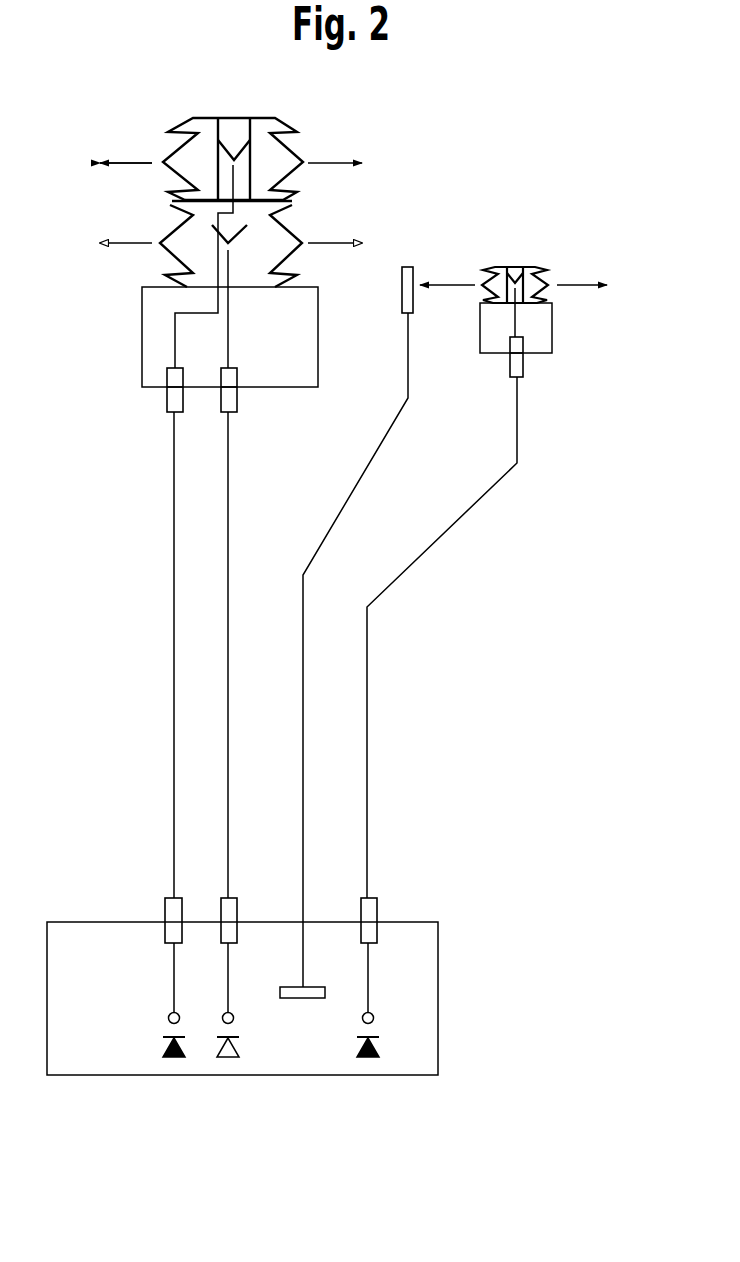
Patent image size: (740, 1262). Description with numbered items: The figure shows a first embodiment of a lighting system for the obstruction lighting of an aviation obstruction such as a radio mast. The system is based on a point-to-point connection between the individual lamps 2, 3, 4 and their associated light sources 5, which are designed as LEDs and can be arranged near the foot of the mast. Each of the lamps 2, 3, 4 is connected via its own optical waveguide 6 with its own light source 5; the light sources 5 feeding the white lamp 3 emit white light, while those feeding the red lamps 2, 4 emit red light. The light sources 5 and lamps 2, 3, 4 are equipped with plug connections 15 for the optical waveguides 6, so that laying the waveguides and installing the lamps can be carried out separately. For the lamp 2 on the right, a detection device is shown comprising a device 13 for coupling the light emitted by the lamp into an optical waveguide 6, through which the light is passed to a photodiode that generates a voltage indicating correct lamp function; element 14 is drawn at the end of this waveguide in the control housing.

The first lamp type lamp 2 is at (548, 262).
The second lamp type lamp 3 is at (158, 263).
The third lamp type lamp 4 is at (172, 112).
The light source 5 is at (177, 1060).
The optical waveguide 6 is at (228, 617).
The device for coupling light 13 is at (410, 270).
The control unit terminal 14 is at (325, 990).
The plug connection 15 is at (160, 402).